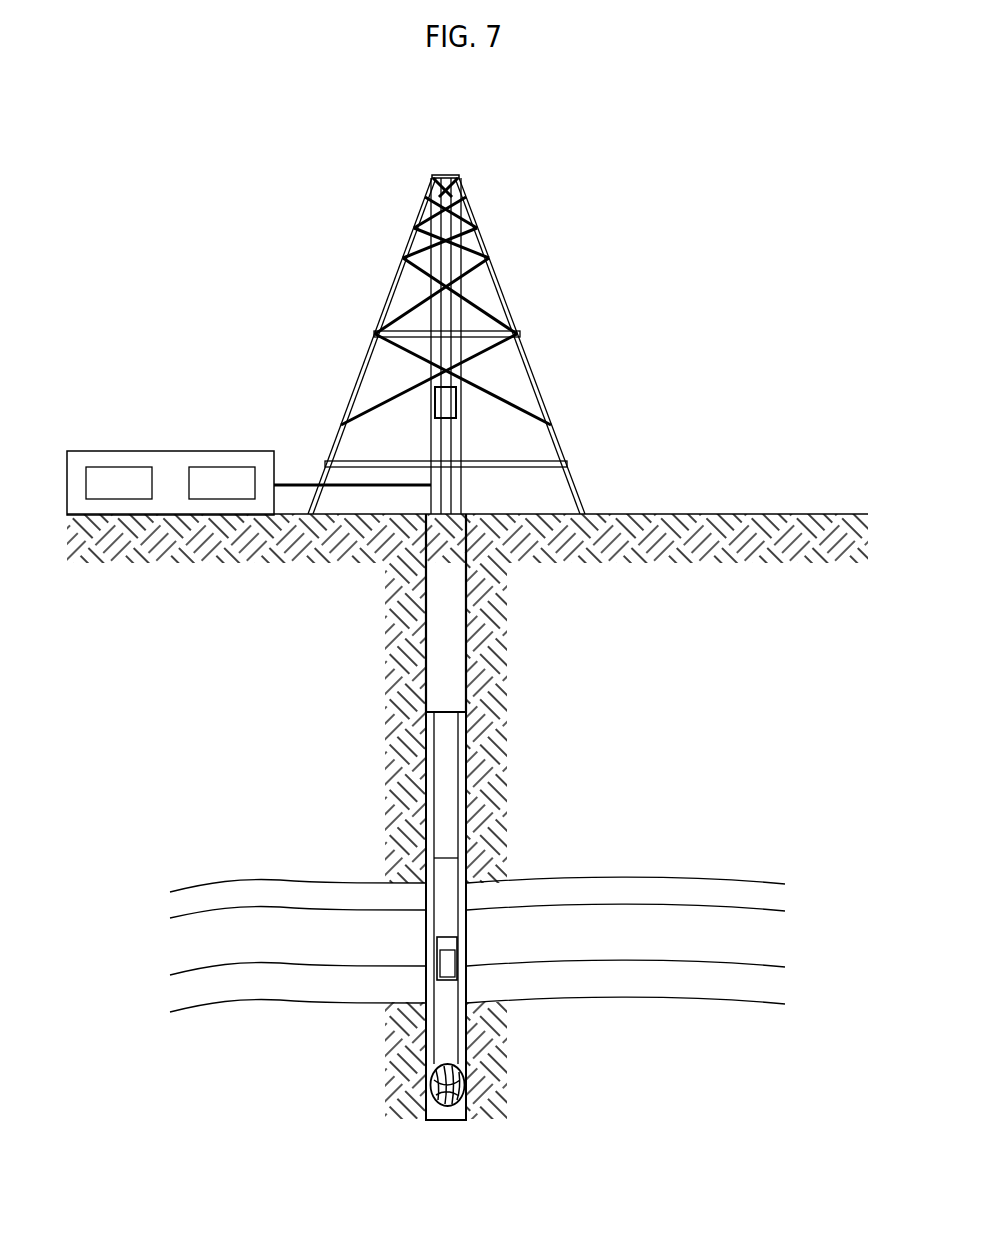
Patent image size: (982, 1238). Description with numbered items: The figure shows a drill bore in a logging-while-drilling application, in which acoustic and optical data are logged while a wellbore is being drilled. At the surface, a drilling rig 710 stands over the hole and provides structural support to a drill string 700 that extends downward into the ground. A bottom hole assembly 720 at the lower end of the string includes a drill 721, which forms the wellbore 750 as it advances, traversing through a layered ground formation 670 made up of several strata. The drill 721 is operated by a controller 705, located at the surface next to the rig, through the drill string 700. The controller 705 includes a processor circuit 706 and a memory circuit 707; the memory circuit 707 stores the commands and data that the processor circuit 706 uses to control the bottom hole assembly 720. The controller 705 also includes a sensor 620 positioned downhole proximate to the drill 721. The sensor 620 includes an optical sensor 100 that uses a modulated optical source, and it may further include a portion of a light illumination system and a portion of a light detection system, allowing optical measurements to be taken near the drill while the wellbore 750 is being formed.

The drilling rig 710 is at (385, 305).
The controller 705 is at (249, 450).
The processor circuit 706 is at (137, 494).
The memory circuit 707 is at (240, 494).
The drill string 700 is at (450, 678).
The drill 721 is at (462, 1077).
The bottom hole assembly 720 is at (447, 1003).
The sensor 620 is at (437, 945).
The optical sensor 100 is at (460, 960).
The wellbore 750 is at (467, 1115).
The layered ground formation 670 is at (796, 870).